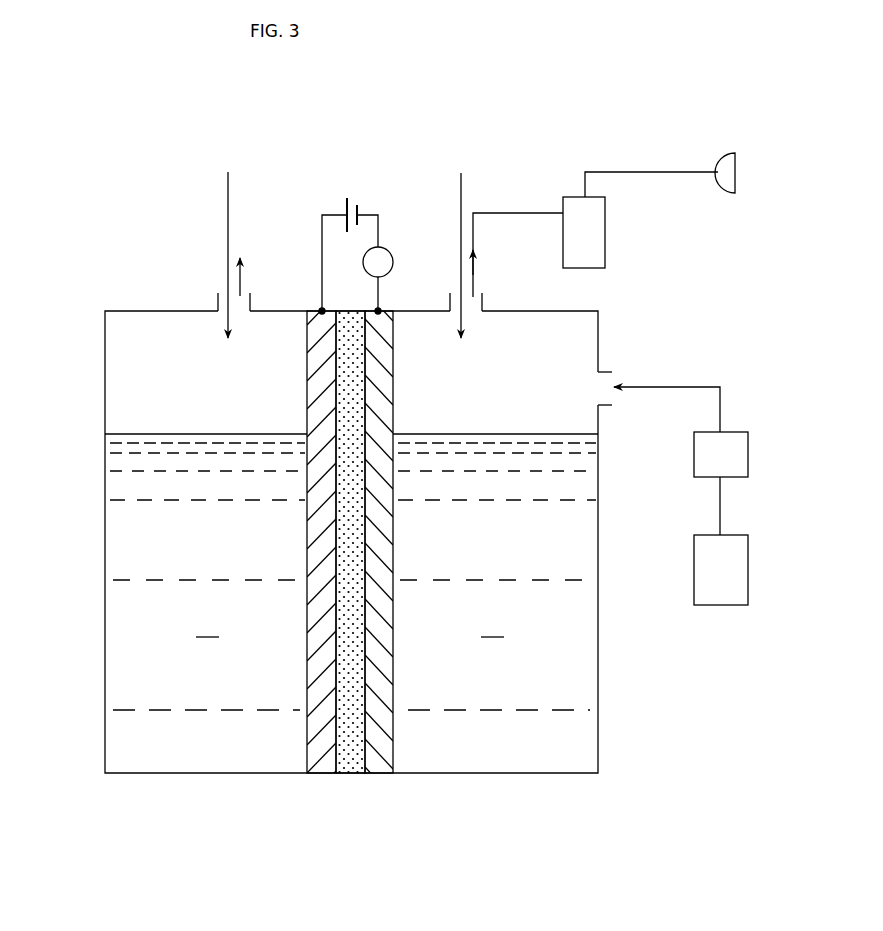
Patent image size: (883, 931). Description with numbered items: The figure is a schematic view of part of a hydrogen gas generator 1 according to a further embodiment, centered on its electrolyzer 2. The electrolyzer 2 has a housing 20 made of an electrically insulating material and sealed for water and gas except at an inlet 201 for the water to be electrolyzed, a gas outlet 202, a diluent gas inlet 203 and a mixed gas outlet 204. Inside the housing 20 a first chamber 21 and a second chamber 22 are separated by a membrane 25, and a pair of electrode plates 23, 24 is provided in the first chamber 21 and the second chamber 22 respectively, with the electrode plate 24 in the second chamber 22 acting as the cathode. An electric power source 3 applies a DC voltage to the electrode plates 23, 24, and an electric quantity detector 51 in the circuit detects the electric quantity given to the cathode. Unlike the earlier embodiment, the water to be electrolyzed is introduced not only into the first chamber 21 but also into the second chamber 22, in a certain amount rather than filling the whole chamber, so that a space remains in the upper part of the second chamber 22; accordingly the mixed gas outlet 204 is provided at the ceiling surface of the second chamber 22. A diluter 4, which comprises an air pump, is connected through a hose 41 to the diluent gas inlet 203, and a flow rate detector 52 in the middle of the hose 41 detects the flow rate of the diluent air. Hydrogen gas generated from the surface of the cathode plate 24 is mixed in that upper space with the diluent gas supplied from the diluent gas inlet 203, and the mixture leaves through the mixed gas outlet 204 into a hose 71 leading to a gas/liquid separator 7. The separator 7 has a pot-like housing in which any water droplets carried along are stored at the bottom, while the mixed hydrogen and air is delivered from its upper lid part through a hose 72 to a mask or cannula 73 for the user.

The hydrogen gas generator 1 is at (784, 129).
The electrolyzer 2 is at (135, 795).
The housing 20 is at (560, 775).
The inlet 201 is at (167, 295).
The gas outlet 202 is at (225, 289).
The diluent gas inlet 203 is at (603, 403).
The mixed gas outlet 204 is at (479, 298).
The first chamber 21 is at (130, 533).
The second chamber 22 is at (565, 535).
The electrode plate 23 is at (313, 757).
The electrode plate 24 is at (392, 752).
The membrane 25 is at (348, 760).
The electric power source 3 is at (352, 197).
The electric quantity detector 51 is at (393, 262).
The diluter 4 is at (748, 568).
The hose 41 is at (695, 385).
The flow rate detector 52 is at (748, 455).
The gas/liquid separator 7 is at (605, 240).
The hose 71 is at (510, 215).
The hose 72 is at (677, 175).
The mask or cannula 73 is at (735, 150).